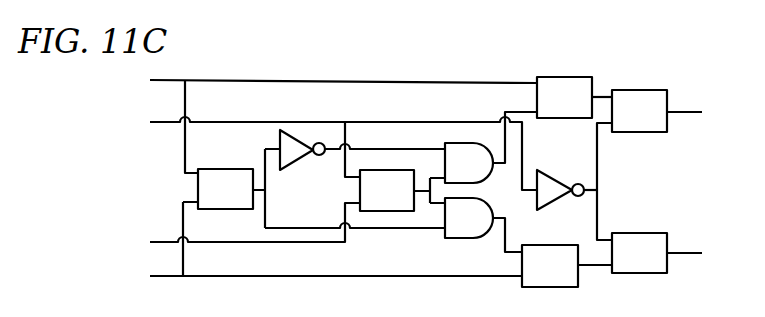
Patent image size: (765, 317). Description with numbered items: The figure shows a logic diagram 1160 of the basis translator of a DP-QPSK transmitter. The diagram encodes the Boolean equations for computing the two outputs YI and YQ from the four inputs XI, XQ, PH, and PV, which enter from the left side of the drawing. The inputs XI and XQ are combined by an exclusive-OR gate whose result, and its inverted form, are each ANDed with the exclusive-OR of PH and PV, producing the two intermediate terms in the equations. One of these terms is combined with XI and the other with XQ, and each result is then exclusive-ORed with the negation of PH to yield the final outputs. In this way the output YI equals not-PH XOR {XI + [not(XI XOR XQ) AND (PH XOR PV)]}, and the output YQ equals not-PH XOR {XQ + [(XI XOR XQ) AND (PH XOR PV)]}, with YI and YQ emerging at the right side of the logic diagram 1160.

The logic diagram 1160 is at (405, 59).
The element XI is at (334, 123).
The element PH is at (331, 152).
The element PV is at (243, 226).
The element XQ is at (323, 243).
The element YI is at (694, 112).
The element YQ is at (696, 253).